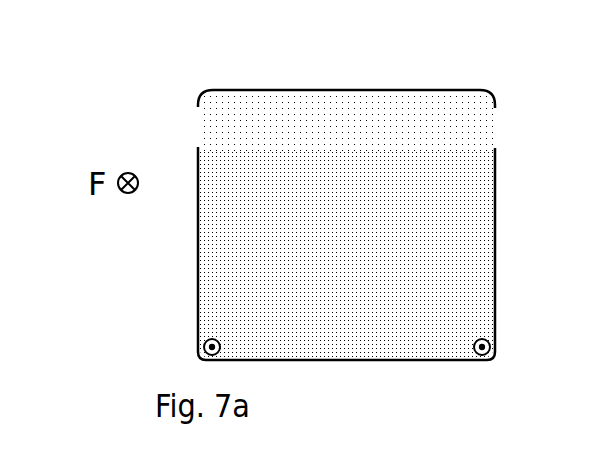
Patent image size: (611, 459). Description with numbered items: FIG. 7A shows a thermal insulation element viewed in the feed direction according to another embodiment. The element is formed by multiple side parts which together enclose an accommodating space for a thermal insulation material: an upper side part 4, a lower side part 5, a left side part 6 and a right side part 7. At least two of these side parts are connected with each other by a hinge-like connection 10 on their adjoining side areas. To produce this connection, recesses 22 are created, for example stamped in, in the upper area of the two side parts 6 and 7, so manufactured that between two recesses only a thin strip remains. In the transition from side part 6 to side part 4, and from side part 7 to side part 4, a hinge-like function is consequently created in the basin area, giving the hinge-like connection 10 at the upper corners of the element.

The hinge-like connection 10 is at (186, 122).
The side part 4 is at (435, 87).
The recess 22 is at (500, 128).
The side part 6 is at (197, 245).
The side part 7 is at (497, 243).
The side part 5 is at (388, 360).